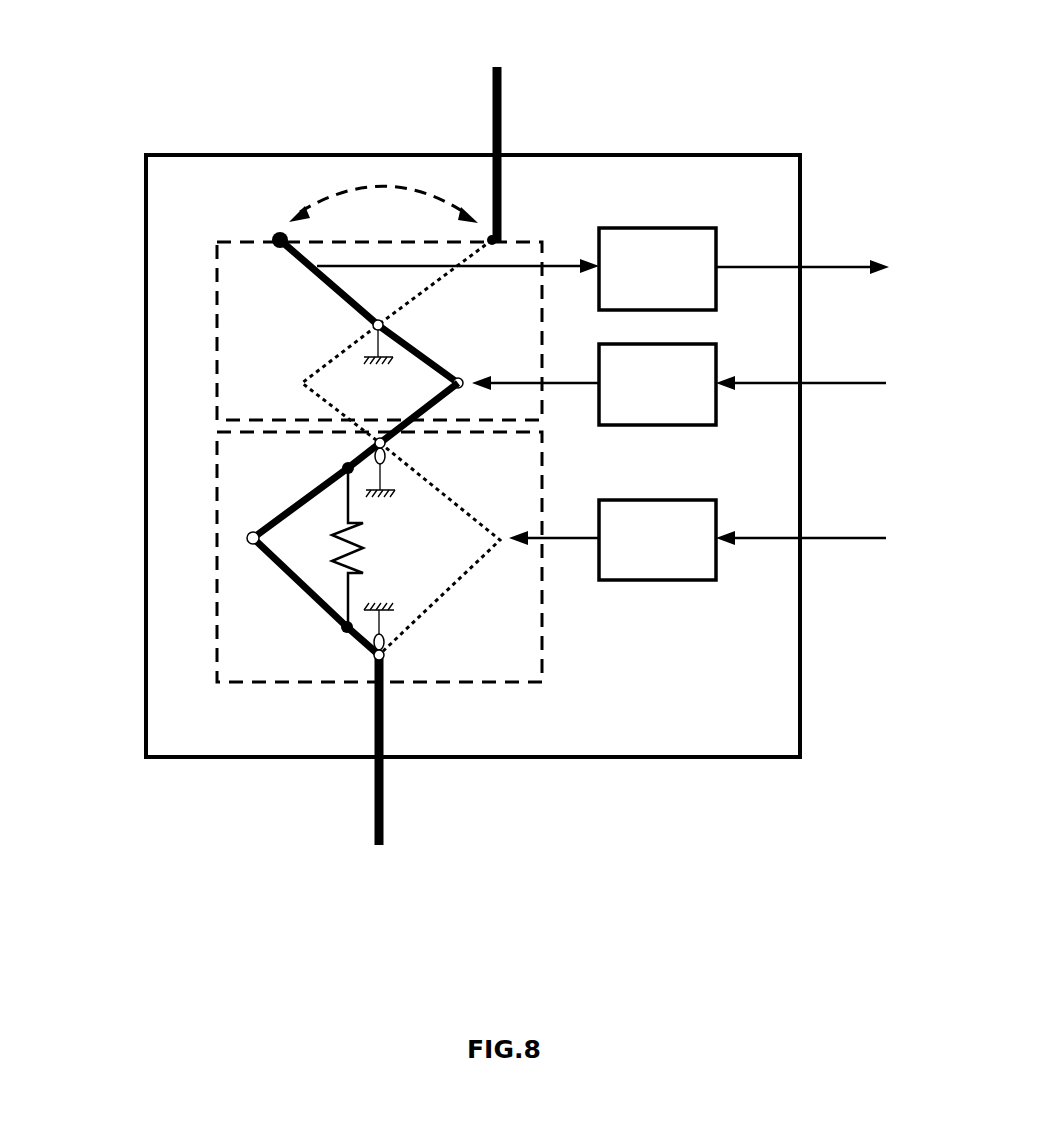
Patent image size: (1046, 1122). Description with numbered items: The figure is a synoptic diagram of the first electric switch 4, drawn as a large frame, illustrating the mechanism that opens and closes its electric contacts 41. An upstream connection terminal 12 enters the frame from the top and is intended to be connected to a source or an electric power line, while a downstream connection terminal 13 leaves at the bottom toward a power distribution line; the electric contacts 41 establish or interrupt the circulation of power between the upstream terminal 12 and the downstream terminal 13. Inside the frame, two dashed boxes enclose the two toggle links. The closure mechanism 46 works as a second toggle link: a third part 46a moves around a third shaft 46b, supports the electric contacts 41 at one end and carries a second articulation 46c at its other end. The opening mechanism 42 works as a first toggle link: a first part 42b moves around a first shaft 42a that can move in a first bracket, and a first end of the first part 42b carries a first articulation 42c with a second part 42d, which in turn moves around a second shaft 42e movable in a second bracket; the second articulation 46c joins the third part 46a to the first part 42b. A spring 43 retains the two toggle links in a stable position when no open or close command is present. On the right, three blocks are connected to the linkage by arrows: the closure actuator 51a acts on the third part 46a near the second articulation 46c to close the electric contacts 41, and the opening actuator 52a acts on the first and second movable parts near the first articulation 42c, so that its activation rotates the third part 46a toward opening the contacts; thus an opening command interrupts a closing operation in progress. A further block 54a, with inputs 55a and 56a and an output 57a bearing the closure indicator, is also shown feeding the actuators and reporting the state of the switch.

The first electric switch 4 is at (670, 677).
The upstream connection terminal 12 is at (502, 125).
The downstream connection terminal 13 is at (387, 785).
The electric contacts 41 is at (482, 230).
The opening mechanism 42 is at (238, 447).
The first shaft 42a is at (374, 445).
The first part 42b is at (343, 471).
The first articulation 42c is at (248, 540).
The second part 42d is at (342, 624).
The second shaft 42e is at (374, 657).
The spring 43 is at (343, 578).
The closure mechanism 46 is at (240, 262).
The third part 46a is at (317, 268).
The third shaft 46b is at (372, 326).
The second articulation 46c is at (452, 383).
The closure actuator 51a is at (663, 402).
The opening actuator 52a is at (695, 557).
The current sensor 54a is at (655, 270).
The first control input 55a is at (822, 380).
The second control input 56a is at (822, 535).
The current output signal 57a is at (825, 263).